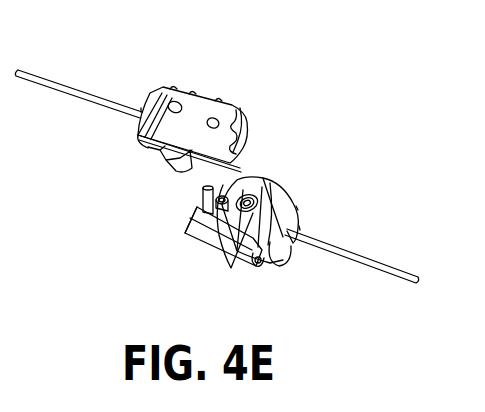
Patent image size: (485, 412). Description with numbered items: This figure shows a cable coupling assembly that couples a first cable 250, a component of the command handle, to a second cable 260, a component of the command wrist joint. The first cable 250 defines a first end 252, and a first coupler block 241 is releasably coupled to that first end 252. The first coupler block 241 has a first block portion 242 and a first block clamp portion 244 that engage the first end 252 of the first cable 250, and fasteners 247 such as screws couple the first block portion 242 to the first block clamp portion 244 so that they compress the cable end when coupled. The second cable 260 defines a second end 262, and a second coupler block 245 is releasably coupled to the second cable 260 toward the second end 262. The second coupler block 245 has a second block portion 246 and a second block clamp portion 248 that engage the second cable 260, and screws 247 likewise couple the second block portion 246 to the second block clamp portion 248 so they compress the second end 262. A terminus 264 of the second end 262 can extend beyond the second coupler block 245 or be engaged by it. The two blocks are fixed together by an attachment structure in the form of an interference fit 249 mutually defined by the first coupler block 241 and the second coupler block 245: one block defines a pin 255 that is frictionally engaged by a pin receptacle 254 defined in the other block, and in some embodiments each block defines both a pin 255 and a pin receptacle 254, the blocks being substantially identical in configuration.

The first cable 250 is at (60, 84).
The first end 252 is at (135, 88).
The first block portion 242 is at (208, 110).
The first block clamp portion 244 is at (143, 152).
The first coupler block 241 is at (152, 165).
The pin 255 is at (233, 152).
The pin receptacle 254 is at (223, 185).
The second block clamp portion 248 is at (293, 197).
The second coupler block 245 is at (307, 202).
The second end 262 is at (311, 225).
The second cable 260 is at (382, 270).
The interference fit 249 is at (189, 196).
The fasteners 247 is at (247, 263).
The second block portion 246 is at (272, 261).
The terminus 264 is at (288, 256).